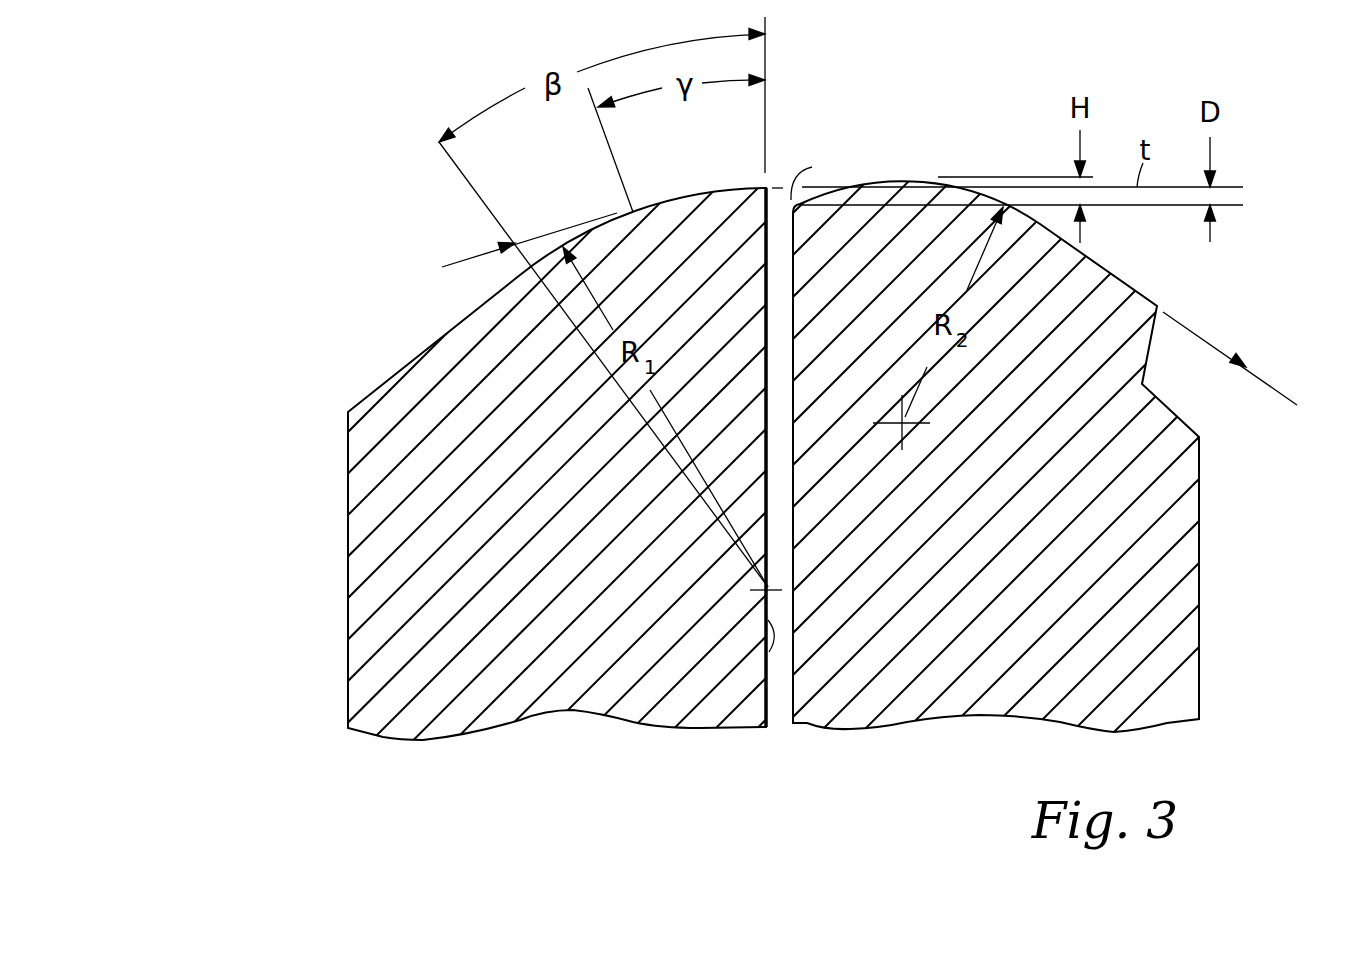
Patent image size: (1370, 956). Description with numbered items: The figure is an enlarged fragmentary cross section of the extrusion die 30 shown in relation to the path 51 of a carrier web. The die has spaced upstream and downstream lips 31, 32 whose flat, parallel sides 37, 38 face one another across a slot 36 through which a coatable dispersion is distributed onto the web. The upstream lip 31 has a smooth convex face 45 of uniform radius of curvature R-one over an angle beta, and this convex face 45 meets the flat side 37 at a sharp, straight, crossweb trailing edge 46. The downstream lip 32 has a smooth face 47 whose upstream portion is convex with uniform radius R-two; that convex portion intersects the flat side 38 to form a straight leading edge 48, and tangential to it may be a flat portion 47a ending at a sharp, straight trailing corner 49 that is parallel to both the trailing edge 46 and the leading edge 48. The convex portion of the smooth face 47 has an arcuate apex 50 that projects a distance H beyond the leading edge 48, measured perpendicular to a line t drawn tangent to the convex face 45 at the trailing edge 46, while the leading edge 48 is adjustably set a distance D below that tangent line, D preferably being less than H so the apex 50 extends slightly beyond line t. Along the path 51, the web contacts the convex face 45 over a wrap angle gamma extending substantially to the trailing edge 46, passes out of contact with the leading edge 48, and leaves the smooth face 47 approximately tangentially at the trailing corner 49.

The extrusion die 30 is at (555, 793).
The upstream lip 31 is at (347, 497).
The downstream lip 32 is at (1199, 470).
The slot 36 is at (787, 653).
The flat side of the upstream lip 37 is at (697, 725).
The flat side of the downstream lip 38 is at (793, 697).
The convex face 45 is at (590, 225).
The trailing edge 46 is at (770, 187).
The smooth face 47 is at (877, 178).
The flat portion 47a is at (1100, 263).
The leading edge 48 is at (821, 169).
The trailing corner 49 is at (1157, 306).
The arcuate apex 50 is at (893, 178).
The path of the carrier web 51 is at (460, 257).